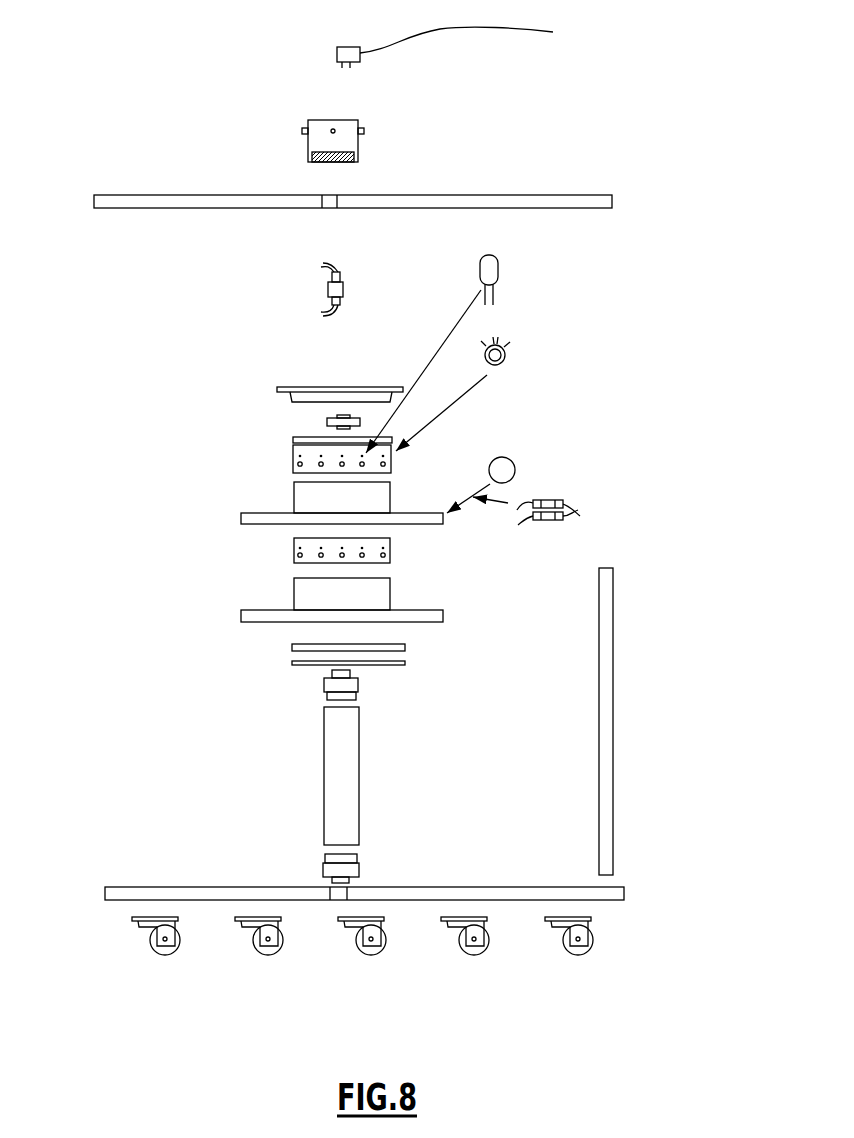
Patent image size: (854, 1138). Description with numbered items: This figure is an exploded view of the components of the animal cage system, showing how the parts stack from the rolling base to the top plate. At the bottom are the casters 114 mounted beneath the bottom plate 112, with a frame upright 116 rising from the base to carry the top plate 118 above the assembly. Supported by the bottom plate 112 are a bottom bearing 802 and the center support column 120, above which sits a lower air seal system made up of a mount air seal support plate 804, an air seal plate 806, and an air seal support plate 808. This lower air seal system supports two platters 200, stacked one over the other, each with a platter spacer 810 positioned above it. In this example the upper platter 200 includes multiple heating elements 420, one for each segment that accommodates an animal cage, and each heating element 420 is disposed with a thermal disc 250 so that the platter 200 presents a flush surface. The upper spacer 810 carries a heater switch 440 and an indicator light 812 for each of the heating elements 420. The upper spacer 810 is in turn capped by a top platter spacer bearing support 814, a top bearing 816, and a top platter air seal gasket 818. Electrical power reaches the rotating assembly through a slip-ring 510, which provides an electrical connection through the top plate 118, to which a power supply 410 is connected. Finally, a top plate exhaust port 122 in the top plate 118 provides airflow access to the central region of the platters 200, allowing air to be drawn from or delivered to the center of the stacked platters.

The bottom plate 112 is at (610, 900).
The casters 114 is at (143, 938).
The frame upright 116 is at (590, 771).
The top plate 118 is at (558, 195).
The center support column 120 is at (324, 770).
The top plate exhaust port 122 is at (358, 143).
The platter 200 is at (390, 496).
The thermal disc 250 is at (515, 466).
The power supply 410 is at (345, 47).
The heating element 420 is at (566, 511).
The heater switch 440 is at (505, 362).
The slip-ring 510 is at (345, 276).
The bottom bearing 802 is at (360, 868).
The mount air seal support plate 804 is at (358, 685).
The air seal plate 806 is at (405, 663).
The air seal support plate 808 is at (405, 647).
The platter spacer 810 is at (391, 462).
The indicator light 812 is at (498, 262).
The top platter spacer bearing support 814 is at (293, 440).
The top bearing 816 is at (327, 422).
The top platter air seal gasket 818 is at (345, 387).